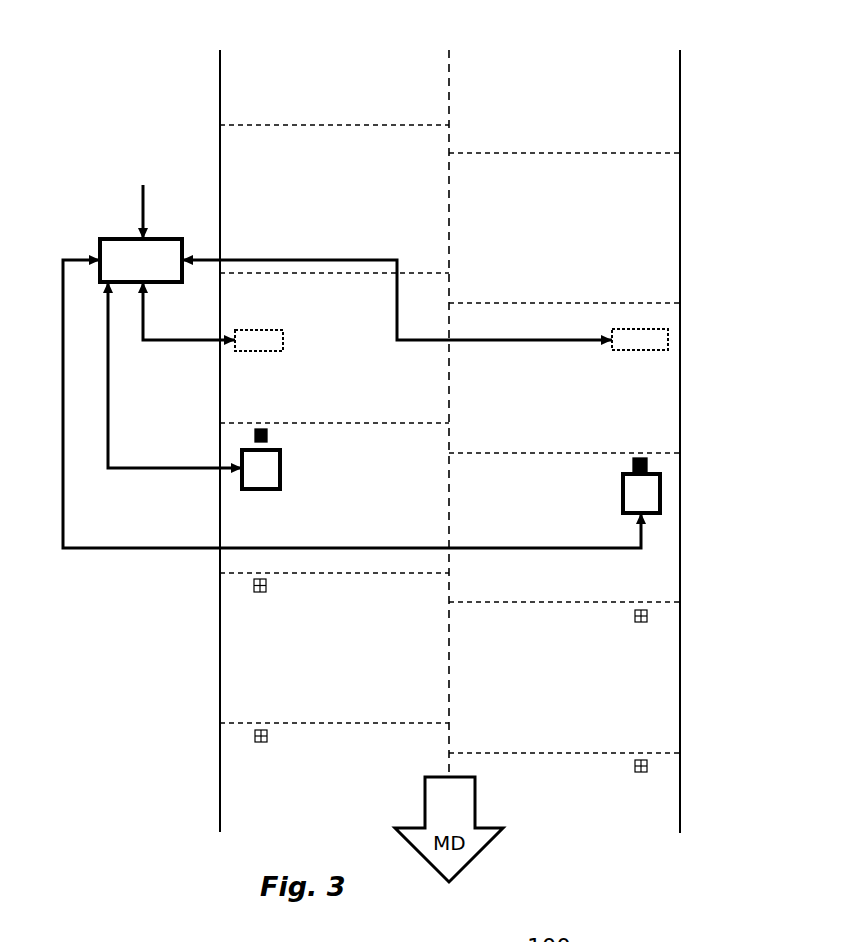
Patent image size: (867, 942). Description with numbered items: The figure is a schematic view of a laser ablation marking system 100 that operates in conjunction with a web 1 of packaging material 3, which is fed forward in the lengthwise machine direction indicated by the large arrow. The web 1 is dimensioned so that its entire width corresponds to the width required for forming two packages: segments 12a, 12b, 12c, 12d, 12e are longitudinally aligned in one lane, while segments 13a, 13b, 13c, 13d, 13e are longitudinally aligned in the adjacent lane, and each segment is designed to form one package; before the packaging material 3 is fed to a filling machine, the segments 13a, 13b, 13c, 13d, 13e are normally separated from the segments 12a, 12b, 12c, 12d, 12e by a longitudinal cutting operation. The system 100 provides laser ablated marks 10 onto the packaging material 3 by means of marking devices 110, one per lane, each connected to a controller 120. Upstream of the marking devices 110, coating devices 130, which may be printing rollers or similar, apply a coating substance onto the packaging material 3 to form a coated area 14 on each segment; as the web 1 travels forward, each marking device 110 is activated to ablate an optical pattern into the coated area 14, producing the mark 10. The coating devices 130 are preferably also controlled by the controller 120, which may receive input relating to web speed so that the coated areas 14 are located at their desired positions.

The web 1 is at (606, 52).
The packaging material 3 is at (670, 222).
The laser ablated mark 10 is at (267, 586).
The segment 12a is at (287, 816).
The segment 12b is at (292, 690).
The segment 12c is at (429, 529).
The segment 12d is at (343, 402).
The segment 12e is at (313, 216).
The segment 13a is at (579, 847).
The segment 13b is at (585, 717).
The segment 13c is at (543, 520).
The segment 13d is at (634, 430).
The segment 13e is at (605, 242).
The coated area 14 is at (255, 440).
The laser ablation marking system 100 is at (134, 534).
The marking device 110 is at (280, 468).
The controller 120 is at (120, 240).
The coating device 130 is at (248, 330).